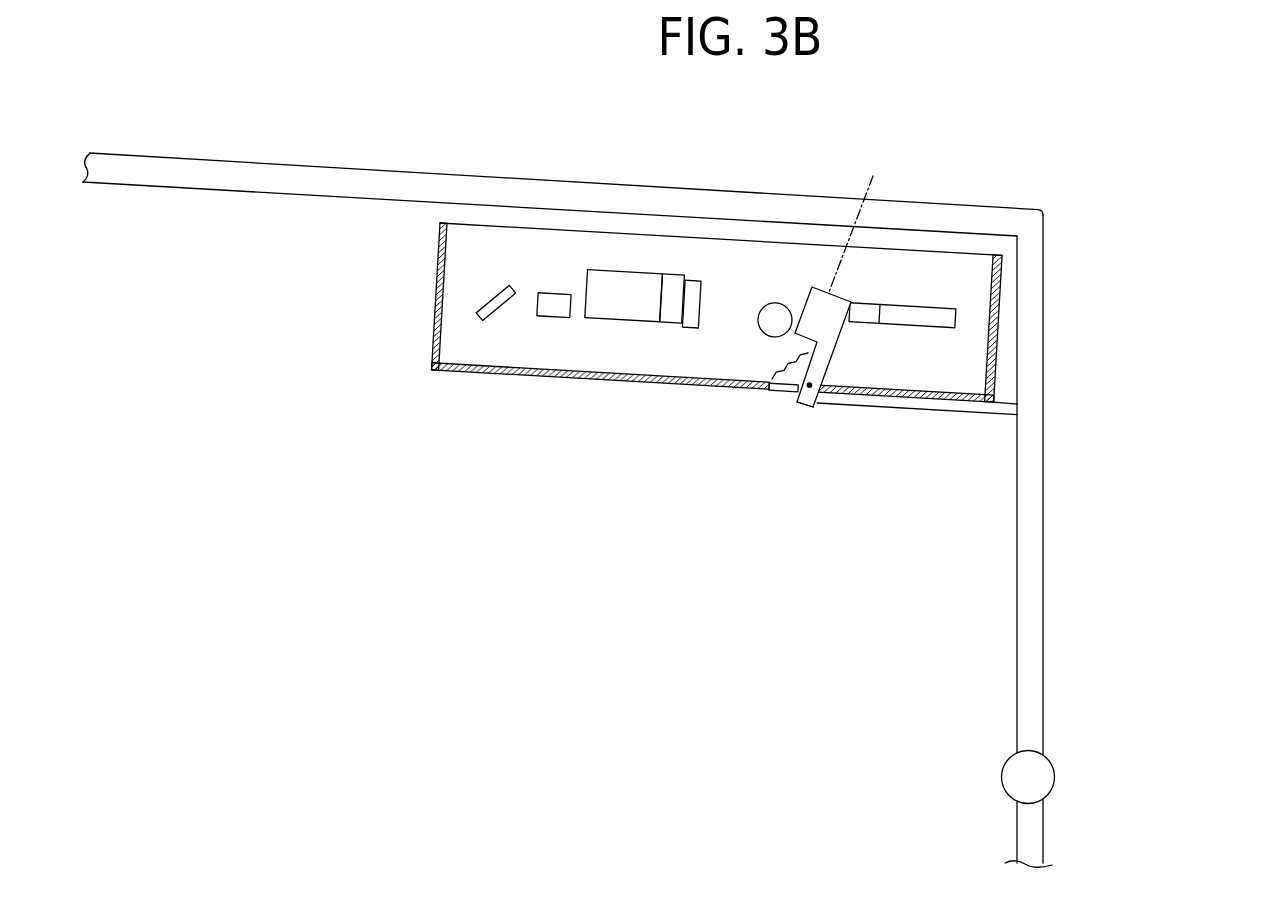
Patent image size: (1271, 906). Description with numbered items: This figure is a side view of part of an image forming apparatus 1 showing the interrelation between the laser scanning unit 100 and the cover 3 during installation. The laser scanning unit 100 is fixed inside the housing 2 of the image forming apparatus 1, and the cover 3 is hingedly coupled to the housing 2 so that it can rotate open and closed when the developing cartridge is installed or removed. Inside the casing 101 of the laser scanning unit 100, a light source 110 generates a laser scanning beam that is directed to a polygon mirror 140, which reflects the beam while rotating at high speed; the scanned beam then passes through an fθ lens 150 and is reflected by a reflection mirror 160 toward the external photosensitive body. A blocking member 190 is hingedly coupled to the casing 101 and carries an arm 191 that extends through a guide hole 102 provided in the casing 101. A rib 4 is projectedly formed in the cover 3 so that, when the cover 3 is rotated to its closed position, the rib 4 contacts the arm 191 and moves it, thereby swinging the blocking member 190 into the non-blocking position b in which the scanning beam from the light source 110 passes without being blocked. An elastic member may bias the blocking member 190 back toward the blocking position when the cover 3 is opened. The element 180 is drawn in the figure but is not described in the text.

The image forming apparatus 1 is at (1210, 130).
The housing 2 is at (536, 180).
The cover 3 is at (1045, 248).
The rib 4 is at (943, 415).
The laser scanning unit 100 is at (972, 233).
The casing 101 is at (1000, 316).
The guide hole 102 is at (780, 389).
The light source 110 is at (770, 302).
The polygon mirror 140 is at (905, 303).
The fθ lens 150 is at (633, 273).
The reflection mirror 160 is at (478, 309).
The switch 180 is at (555, 318).
The blocking member 190 is at (833, 348).
The arm 191 is at (803, 409).
The non-blocking position b is at (855, 224).